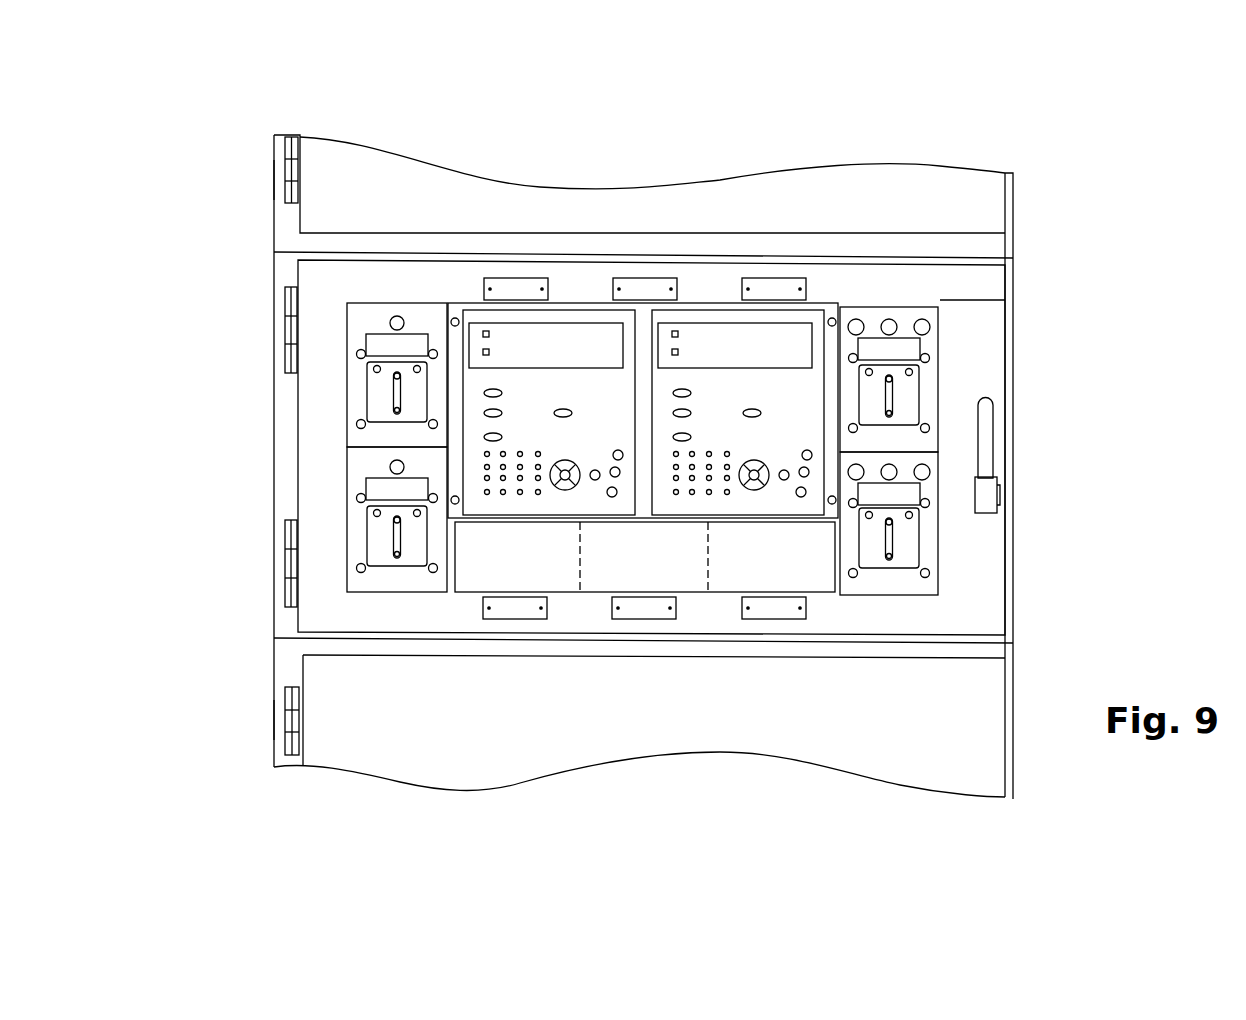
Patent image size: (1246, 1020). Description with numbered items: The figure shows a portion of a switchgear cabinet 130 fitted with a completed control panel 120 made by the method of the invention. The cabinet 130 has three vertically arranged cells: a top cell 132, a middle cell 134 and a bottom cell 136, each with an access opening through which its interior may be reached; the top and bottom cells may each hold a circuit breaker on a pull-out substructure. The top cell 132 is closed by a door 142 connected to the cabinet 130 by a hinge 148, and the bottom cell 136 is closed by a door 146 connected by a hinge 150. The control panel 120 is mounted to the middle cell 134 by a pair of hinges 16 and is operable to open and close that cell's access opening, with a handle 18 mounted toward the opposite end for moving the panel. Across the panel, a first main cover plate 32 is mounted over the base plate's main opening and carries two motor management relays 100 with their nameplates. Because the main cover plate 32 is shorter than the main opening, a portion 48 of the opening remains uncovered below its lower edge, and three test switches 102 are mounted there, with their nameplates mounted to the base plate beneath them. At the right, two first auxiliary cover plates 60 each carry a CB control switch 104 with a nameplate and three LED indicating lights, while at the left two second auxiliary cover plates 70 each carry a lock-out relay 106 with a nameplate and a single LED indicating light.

The switchgear cabinet 130 is at (250, 141).
The hinge 148 is at (284, 147).
The door 142 is at (385, 193).
The top cell 132 is at (271, 177).
The middle cell 134 is at (281, 435).
The second auxiliary cover plate 70 is at (347, 331).
The hinges 16 is at (281, 338).
The lock-out relay 106 is at (380, 386).
The first main cover plate 32 is at (641, 492).
The motor management relay 100 is at (530, 386).
The portion of the main opening 48 is at (471, 599).
The test switch 102 is at (516, 577).
The first auxiliary cover plate 60 is at (940, 355).
The CB control switch 104 is at (907, 392).
The control panel 120 is at (988, 331).
The handle 18 is at (996, 441).
The bottom cell 136 is at (277, 710).
The hinge 150 is at (284, 728).
The door 146 is at (383, 727).